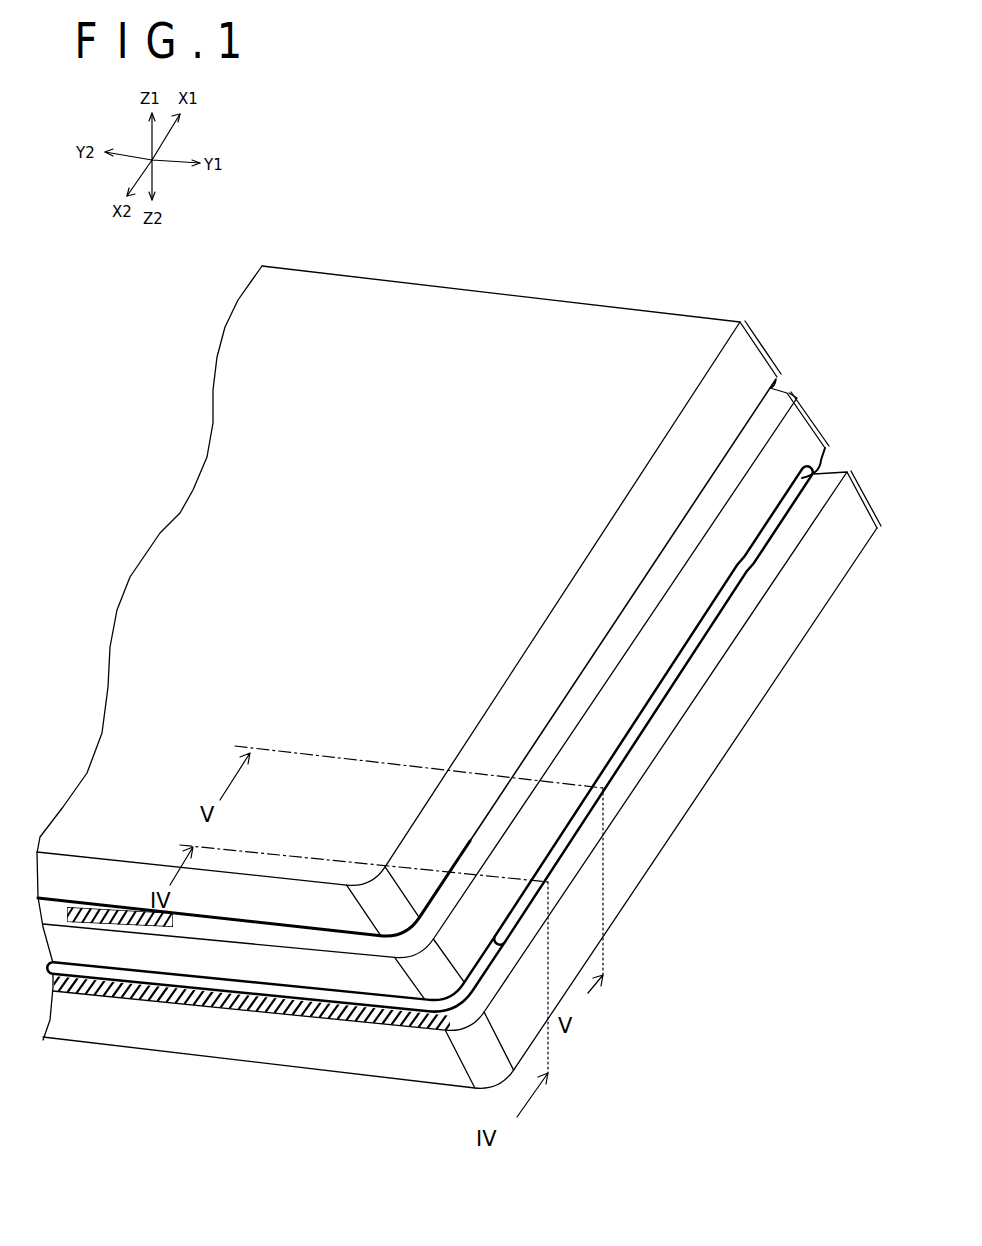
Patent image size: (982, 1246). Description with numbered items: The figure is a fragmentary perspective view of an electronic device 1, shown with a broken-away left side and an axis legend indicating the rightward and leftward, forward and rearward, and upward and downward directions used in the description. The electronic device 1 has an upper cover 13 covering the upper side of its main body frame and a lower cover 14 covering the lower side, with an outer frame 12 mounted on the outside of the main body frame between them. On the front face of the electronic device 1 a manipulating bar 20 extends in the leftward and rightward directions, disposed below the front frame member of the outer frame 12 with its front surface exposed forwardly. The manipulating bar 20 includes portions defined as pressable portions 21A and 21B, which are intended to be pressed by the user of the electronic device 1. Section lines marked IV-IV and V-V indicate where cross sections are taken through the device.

The electronic device 1 is at (661, 205).
The outer frame 12 is at (798, 437).
The upper cover 13 is at (541, 322).
The lower cover 14 is at (737, 703).
The manipulating bar 20 is at (637, 740).
The pressable portion 21A is at (485, 957).
The pressable portion 21B is at (717, 613).